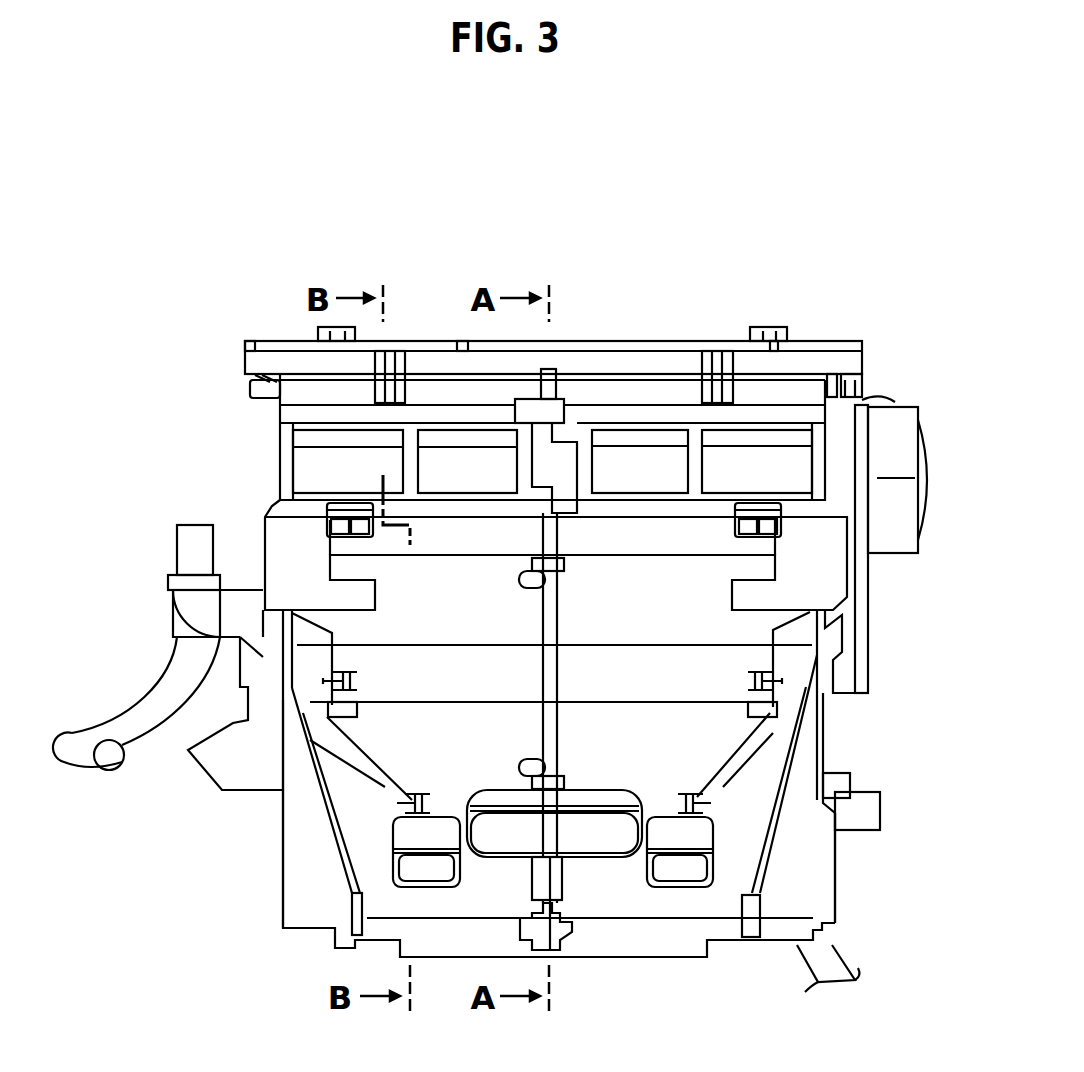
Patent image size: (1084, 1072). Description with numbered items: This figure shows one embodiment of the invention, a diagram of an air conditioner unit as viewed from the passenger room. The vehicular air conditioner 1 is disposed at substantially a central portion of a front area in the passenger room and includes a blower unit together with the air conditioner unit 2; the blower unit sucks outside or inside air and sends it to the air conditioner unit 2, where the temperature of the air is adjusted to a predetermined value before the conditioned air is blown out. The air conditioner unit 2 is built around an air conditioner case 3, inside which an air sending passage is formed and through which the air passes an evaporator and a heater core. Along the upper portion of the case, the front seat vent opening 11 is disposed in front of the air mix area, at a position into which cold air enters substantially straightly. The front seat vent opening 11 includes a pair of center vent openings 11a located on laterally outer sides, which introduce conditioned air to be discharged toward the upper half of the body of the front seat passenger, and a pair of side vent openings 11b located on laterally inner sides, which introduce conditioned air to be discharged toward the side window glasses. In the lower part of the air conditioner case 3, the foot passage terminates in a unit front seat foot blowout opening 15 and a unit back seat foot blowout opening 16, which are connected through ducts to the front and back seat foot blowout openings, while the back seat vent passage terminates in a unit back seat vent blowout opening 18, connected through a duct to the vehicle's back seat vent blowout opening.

The vehicular air conditioner 1 is at (824, 235).
The air conditioner unit 2 is at (240, 380).
The air conditioner case 3 is at (727, 668).
The front seat vent opening 11 is at (666, 463).
The center vent opening 11a is at (330, 450).
The side vent opening 11b is at (465, 450).
The unit front seat foot blowout opening 15 is at (283, 890).
The unit back seat foot blowout opening 16 is at (430, 888).
The unit back seat vent blowout opening 18 is at (598, 840).